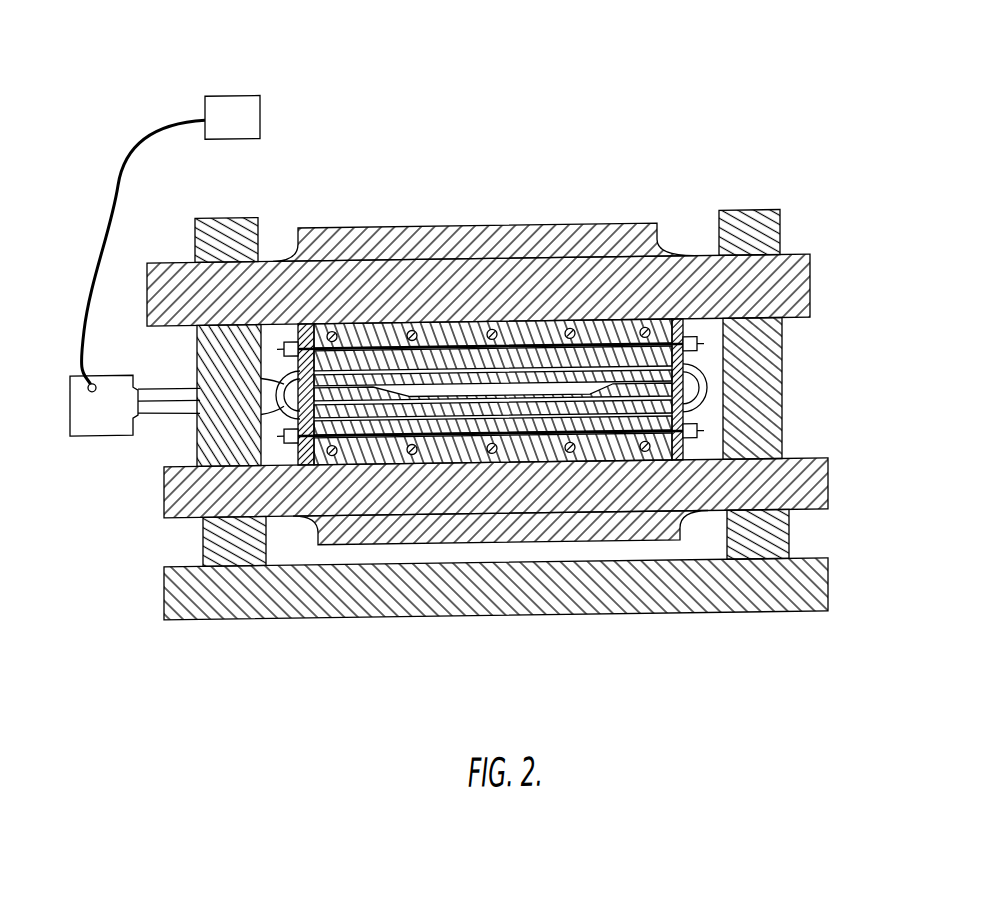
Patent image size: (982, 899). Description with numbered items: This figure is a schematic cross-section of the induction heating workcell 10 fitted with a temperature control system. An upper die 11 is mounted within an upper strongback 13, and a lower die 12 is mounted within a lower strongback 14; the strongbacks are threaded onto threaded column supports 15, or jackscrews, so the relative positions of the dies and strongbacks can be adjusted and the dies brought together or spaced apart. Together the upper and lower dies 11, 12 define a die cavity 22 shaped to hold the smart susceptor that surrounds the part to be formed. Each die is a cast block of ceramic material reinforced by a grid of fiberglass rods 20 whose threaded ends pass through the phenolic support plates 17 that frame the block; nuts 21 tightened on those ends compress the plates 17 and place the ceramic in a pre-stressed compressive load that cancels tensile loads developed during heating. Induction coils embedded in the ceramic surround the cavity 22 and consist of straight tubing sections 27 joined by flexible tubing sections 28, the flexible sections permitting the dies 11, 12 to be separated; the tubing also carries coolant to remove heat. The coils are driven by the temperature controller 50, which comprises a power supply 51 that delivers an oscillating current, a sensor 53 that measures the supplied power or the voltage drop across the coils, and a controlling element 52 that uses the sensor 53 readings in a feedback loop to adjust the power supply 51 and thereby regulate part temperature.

The induction heating workcell 10 is at (582, 114).
The upper die 11 is at (446, 337).
The lower die 12 is at (436, 466).
The upper strongback 13 is at (797, 294).
The lower strongback 14 is at (546, 525).
The threaded column supports 15 is at (223, 219).
The support plates 17 is at (290, 337).
The fiberglass rods 20 is at (508, 338).
The nuts 21 is at (698, 434).
The die cavity 22 is at (582, 388).
The straight tubing sections 27 is at (360, 364).
The flexible tubing sections 28 is at (708, 394).
The temperature controller 50 is at (116, 114).
The power supply 51 is at (88, 434).
The controlling element 52 is at (260, 115).
The sensor 53 is at (96, 383).